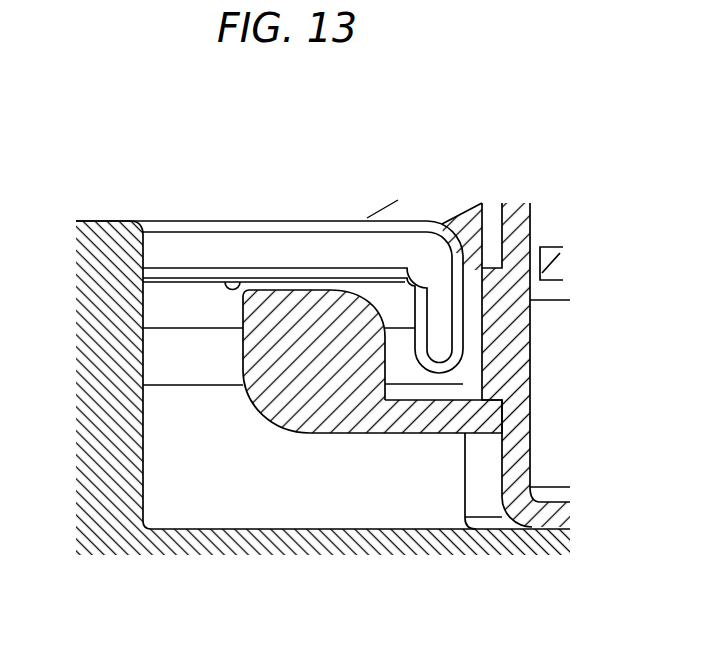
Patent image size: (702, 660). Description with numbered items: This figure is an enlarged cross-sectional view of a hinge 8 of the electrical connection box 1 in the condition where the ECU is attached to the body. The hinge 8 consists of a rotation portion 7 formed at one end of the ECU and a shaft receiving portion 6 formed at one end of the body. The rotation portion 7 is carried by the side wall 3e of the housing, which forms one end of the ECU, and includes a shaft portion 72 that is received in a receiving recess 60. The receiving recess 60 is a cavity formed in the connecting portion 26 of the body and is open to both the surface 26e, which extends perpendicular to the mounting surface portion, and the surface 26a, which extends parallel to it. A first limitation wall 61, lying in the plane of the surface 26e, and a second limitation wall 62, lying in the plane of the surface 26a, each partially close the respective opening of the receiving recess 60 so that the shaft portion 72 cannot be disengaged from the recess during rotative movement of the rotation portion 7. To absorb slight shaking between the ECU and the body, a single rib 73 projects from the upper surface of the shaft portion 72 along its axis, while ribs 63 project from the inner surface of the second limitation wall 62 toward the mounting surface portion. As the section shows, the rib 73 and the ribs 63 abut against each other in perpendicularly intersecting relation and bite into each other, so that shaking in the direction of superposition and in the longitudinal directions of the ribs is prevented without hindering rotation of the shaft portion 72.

The display device 1 is at (559, 132).
The hinge 8 is at (491, 158).
The shaft receiving portion 6 is at (278, 196).
The surface 26a is at (116, 218).
The receiving recess 60 is at (183, 430).
The rib 63 is at (225, 270).
The rib 73 is at (289, 273).
The second limitation wall 62 is at (345, 247).
The side wall 3e is at (470, 247).
The first limitation wall 61 is at (445, 308).
The surface 26e is at (465, 478).
The connecting portion 26 is at (102, 490).
The shaft portion 72 is at (287, 418).
The rotation portion 7 is at (342, 455).